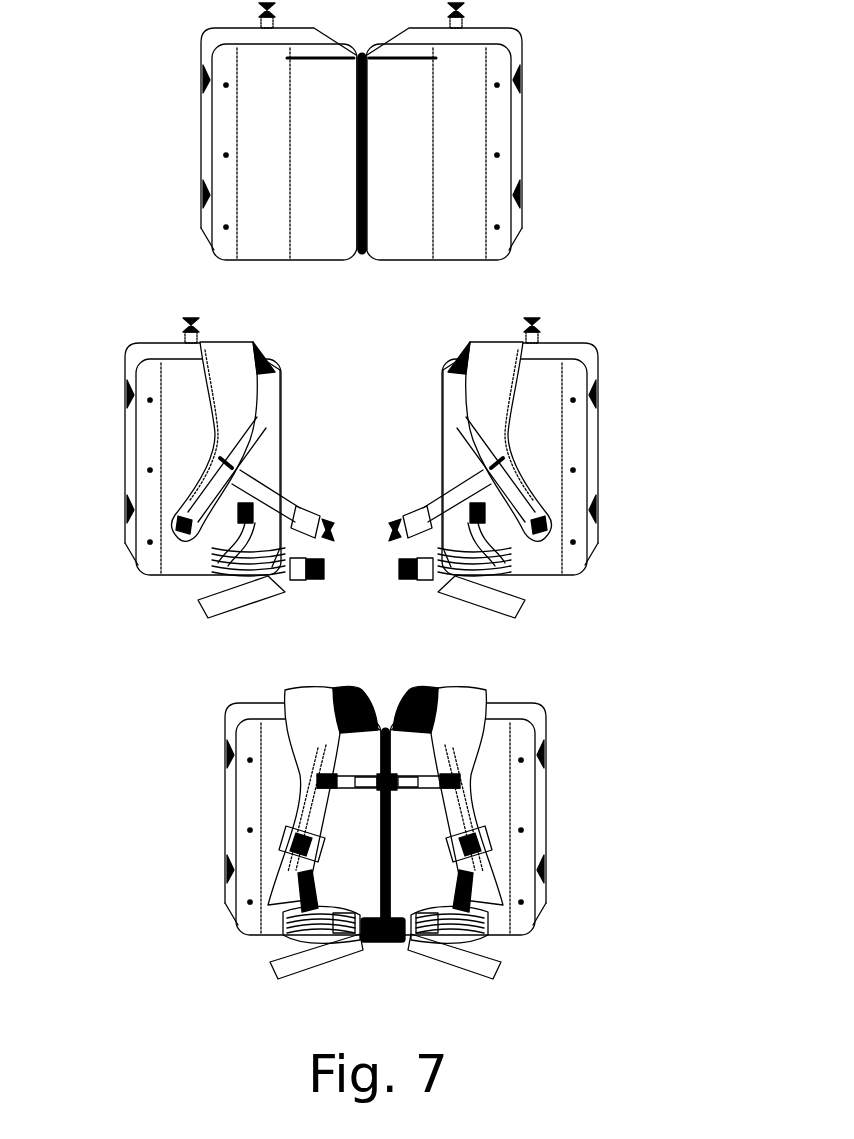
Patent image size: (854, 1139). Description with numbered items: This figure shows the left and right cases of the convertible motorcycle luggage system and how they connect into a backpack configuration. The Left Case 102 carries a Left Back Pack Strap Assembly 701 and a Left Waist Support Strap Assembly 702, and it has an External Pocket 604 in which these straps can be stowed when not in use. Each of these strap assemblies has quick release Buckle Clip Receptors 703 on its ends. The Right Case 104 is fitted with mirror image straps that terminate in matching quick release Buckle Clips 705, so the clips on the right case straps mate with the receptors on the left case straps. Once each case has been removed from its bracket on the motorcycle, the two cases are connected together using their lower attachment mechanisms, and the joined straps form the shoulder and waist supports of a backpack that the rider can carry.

The Left Case 102 is at (522, 106).
The Right Case 104 is at (194, 130).
The External Pocket 604 is at (407, 263).
The Left Back Pack Strap Assembly 701 is at (522, 385).
The Left Waist Support Strap Assembly 702 is at (532, 604).
The Buckle Clip Receptors 703 is at (550, 522).
The Buckle Clips 705 is at (168, 528).